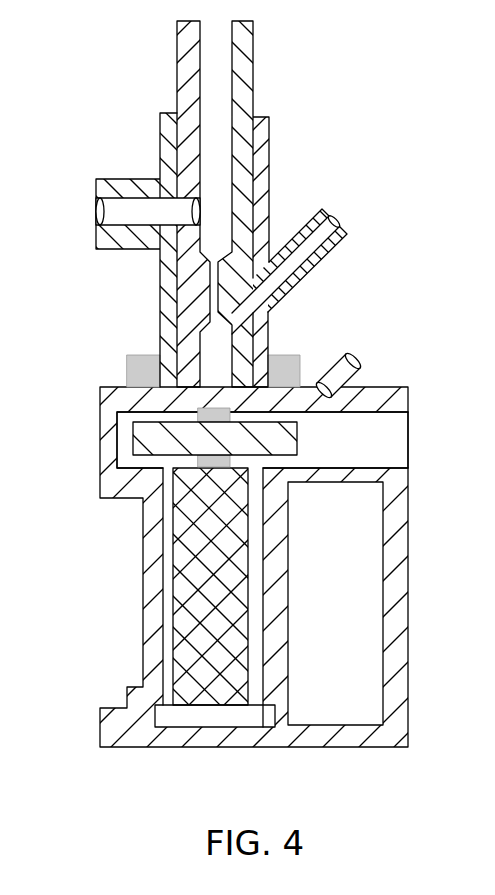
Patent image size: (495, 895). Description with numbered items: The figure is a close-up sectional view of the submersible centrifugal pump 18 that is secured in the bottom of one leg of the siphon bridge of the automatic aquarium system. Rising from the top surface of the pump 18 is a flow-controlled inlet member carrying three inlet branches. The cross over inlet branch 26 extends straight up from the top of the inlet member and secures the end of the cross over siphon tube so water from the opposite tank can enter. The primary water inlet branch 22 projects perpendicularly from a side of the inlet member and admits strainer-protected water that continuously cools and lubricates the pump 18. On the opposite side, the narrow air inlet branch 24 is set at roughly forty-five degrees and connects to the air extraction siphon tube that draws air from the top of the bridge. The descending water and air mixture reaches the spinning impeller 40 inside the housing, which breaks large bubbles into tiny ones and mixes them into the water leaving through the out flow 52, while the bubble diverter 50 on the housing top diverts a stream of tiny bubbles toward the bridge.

The submersible pump 18 is at (397, 680).
The primary water inlet branch 22 is at (110, 250).
The air inlet branch 24 is at (347, 233).
The cross over inlet branch 26 is at (270, 124).
The impeller 40 is at (100, 442).
The bubble diverter 50 is at (356, 360).
The out flow 52 is at (395, 438).